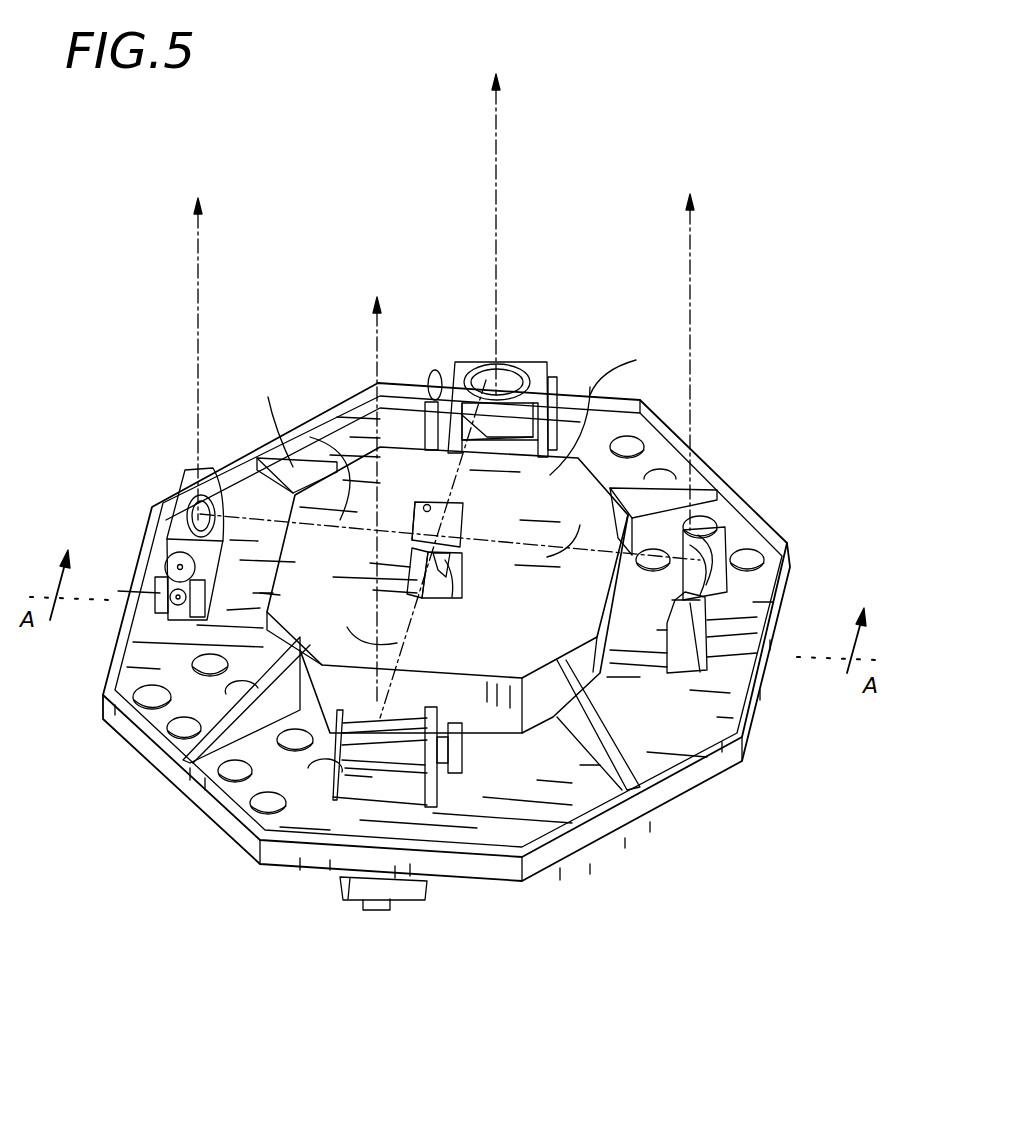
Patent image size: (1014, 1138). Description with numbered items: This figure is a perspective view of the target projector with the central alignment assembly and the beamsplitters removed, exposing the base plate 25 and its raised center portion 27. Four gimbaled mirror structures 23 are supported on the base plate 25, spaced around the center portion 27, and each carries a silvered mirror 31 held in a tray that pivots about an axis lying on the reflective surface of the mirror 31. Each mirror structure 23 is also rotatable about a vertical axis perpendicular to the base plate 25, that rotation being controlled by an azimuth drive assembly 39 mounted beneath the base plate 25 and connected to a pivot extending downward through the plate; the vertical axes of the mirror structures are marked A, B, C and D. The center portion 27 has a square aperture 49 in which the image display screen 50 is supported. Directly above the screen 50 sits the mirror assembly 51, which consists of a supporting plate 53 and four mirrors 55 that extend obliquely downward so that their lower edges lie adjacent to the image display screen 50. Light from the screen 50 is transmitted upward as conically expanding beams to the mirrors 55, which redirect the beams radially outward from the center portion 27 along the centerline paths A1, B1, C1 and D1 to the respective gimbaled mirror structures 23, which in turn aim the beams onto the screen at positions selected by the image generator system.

The mirror structure 23 is at (185, 463).
The base plate 25 is at (680, 740).
The center portion 27 is at (545, 640).
The silvered mirror 31 is at (180, 487).
The azimuth drive assembly 39 is at (355, 885).
The square aperture 49 is at (403, 558).
The image display screen 50 is at (458, 583).
The mirror assembly 51 is at (455, 512).
The supporting plate 53 is at (425, 505).
The mirrors 55 is at (445, 600).
The axis A is at (198, 248).
The axis B is at (377, 345).
The axis C is at (497, 160).
The axis D is at (690, 235).
The centerline path A1 is at (301, 446).
The centerline path B1 is at (366, 623).
The centerline path C1 is at (611, 411).
The centerline path D1 is at (573, 527).